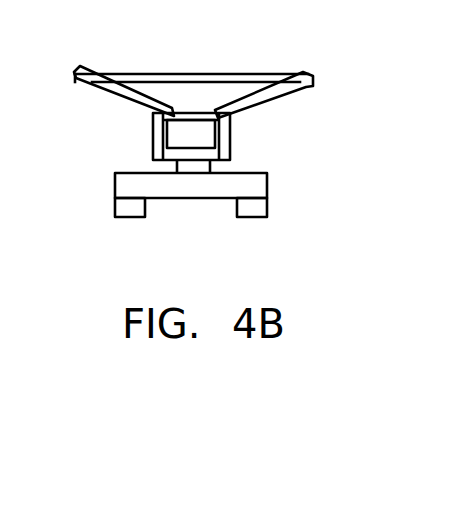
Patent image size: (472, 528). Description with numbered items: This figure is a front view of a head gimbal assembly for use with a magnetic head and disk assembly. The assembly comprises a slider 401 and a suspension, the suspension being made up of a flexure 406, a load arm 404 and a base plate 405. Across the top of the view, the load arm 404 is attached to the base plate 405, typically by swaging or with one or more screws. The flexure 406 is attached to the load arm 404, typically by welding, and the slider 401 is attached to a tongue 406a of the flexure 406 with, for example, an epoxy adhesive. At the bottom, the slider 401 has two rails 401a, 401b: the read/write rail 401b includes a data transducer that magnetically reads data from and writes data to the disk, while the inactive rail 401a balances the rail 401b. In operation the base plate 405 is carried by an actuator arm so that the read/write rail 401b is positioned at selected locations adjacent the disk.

The slider 401 is at (267, 188).
The inactive rail 401a is at (128, 218).
The read/write rail 401b is at (257, 219).
The load arm 404 is at (277, 93).
The base plate 405 is at (185, 72).
The flexure 406 is at (230, 142).
The tongue 406a is at (172, 163).